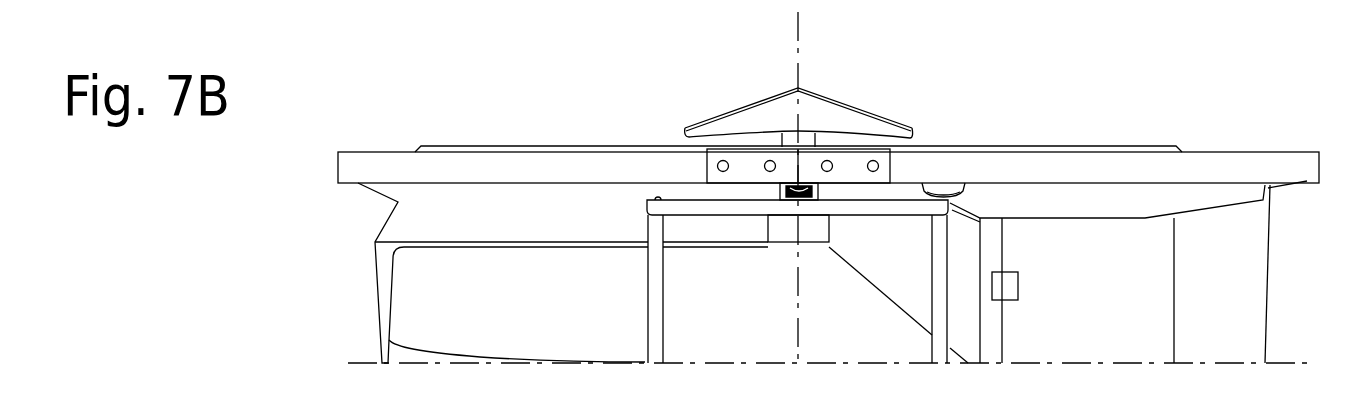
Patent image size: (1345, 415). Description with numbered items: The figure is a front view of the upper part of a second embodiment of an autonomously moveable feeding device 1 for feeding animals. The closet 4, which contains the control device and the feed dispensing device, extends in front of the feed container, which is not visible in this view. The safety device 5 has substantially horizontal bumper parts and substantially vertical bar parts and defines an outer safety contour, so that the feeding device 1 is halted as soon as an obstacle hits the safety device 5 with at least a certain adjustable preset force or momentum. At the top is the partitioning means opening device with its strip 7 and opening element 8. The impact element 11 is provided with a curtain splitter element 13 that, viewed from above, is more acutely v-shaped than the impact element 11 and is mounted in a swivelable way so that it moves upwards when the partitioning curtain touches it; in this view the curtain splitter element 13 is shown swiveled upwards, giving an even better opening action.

The autonomously moveable feeding device 1 is at (1170, 110).
The closet 4 is at (457, 308).
The safety device 5 is at (657, 293).
The strip 7 is at (378, 176).
The opening element 8 is at (819, 86).
The impact element 11 is at (737, 165).
The curtain splitter element 13 is at (760, 118).